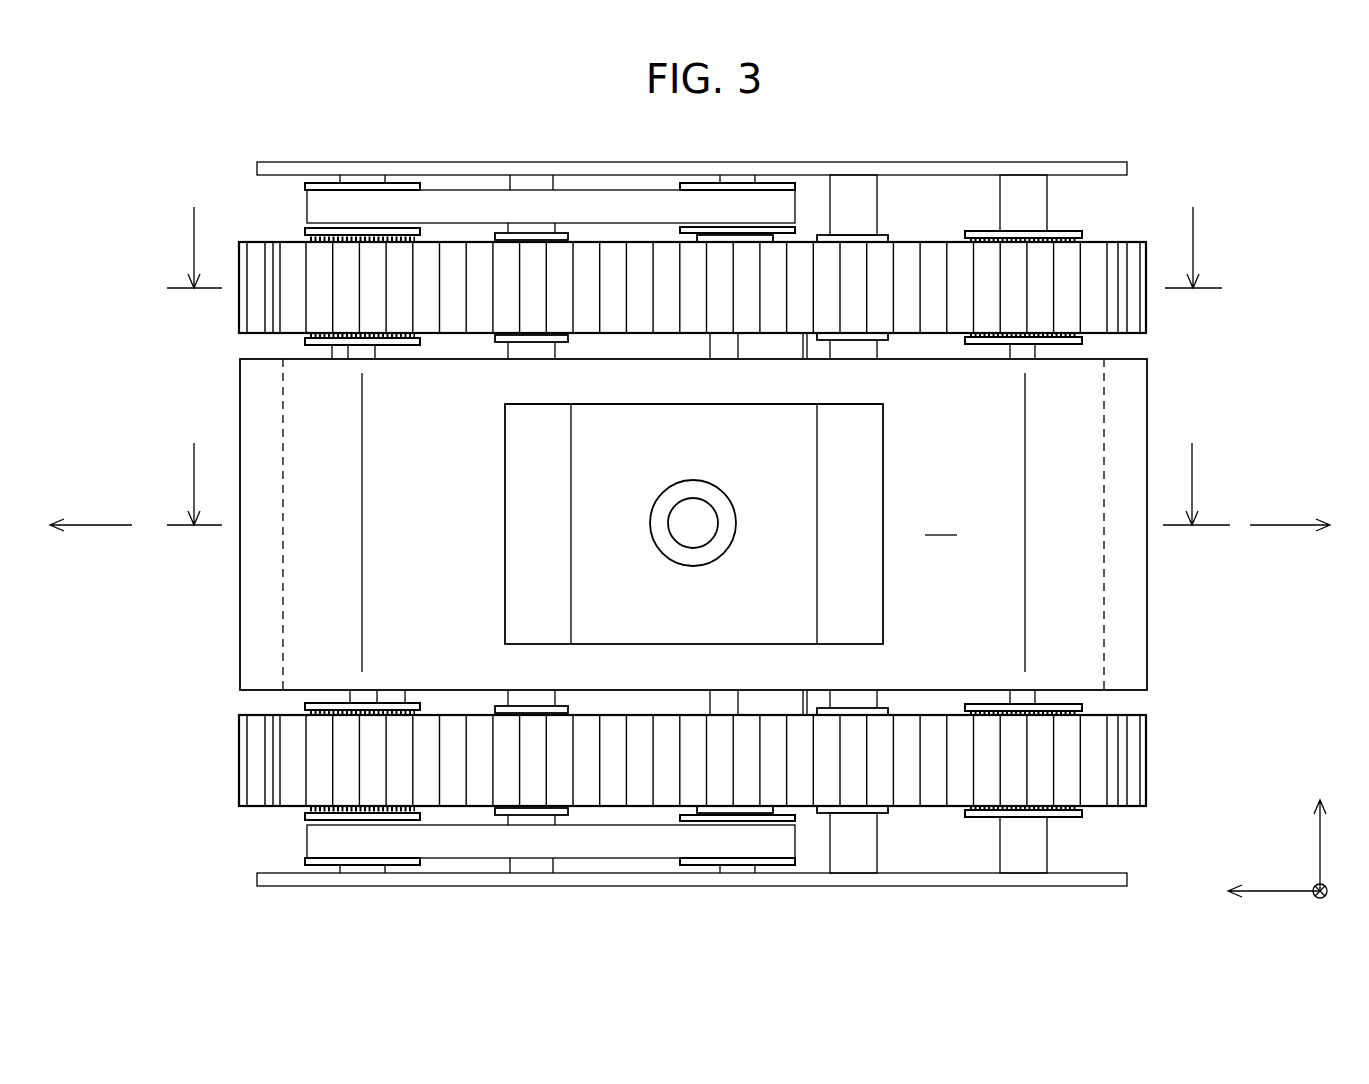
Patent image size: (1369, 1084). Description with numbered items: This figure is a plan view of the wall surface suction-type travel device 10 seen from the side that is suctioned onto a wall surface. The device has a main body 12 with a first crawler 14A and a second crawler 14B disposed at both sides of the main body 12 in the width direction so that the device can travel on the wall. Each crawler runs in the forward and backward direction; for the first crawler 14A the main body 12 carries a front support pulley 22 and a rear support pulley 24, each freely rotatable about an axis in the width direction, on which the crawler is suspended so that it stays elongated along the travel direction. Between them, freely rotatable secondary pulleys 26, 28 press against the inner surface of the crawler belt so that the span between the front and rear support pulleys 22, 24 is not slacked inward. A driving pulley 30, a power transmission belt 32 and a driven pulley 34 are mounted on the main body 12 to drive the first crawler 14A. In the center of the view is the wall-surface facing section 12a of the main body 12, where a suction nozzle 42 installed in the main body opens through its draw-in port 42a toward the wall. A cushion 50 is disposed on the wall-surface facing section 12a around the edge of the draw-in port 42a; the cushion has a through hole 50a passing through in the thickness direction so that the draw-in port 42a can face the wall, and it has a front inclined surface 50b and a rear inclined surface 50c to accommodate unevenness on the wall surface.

The wall surface suction-type travel device 10 is at (118, 208).
The main body 12 is at (310, 583).
The wall-surface facing section 12a is at (588, 441).
The first crawler 14A is at (1147, 313).
The second crawler 14B is at (1147, 790).
The front support pulley 22 is at (330, 358).
The rear support pulley 24 is at (1060, 231).
The secondary pulley 26 is at (497, 358).
The secondary pulley 28 is at (882, 233).
The driving pulley 30 is at (783, 183).
The power transmission belt 32 is at (583, 223).
The driven pulley 34 is at (410, 183).
The suction nozzle 42 is at (661, 541).
The draw-in port 42a is at (698, 533).
The cushion 50 is at (240, 577).
The through hole 50a is at (745, 412).
The front inclined surface 50b is at (258, 400).
The rear inclined surface 50c is at (1130, 580).